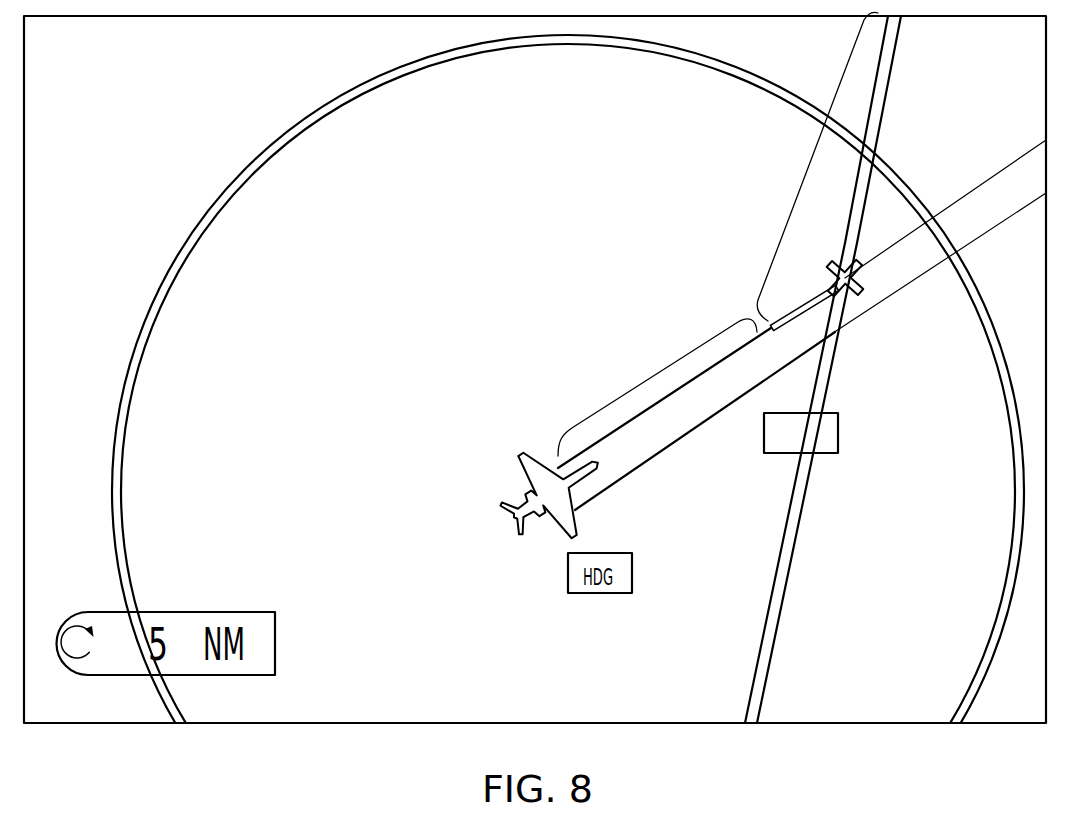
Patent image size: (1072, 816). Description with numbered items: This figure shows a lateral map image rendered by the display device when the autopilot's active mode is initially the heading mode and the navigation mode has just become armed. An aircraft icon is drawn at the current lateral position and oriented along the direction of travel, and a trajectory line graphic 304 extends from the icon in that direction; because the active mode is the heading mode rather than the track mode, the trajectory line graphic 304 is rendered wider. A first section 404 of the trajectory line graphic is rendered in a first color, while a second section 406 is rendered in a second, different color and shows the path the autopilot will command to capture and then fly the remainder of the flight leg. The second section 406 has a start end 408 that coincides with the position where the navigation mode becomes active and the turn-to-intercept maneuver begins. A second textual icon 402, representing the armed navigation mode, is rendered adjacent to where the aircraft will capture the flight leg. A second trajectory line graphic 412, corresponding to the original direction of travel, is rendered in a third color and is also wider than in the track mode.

The trajectory line graphic 304 is at (696, 369).
The second textual icon 402 is at (838, 430).
The first section 404 is at (652, 379).
The second section 406 is at (810, 160).
The start end 408 is at (771, 330).
The second trajectory line graphic 412 is at (991, 183).